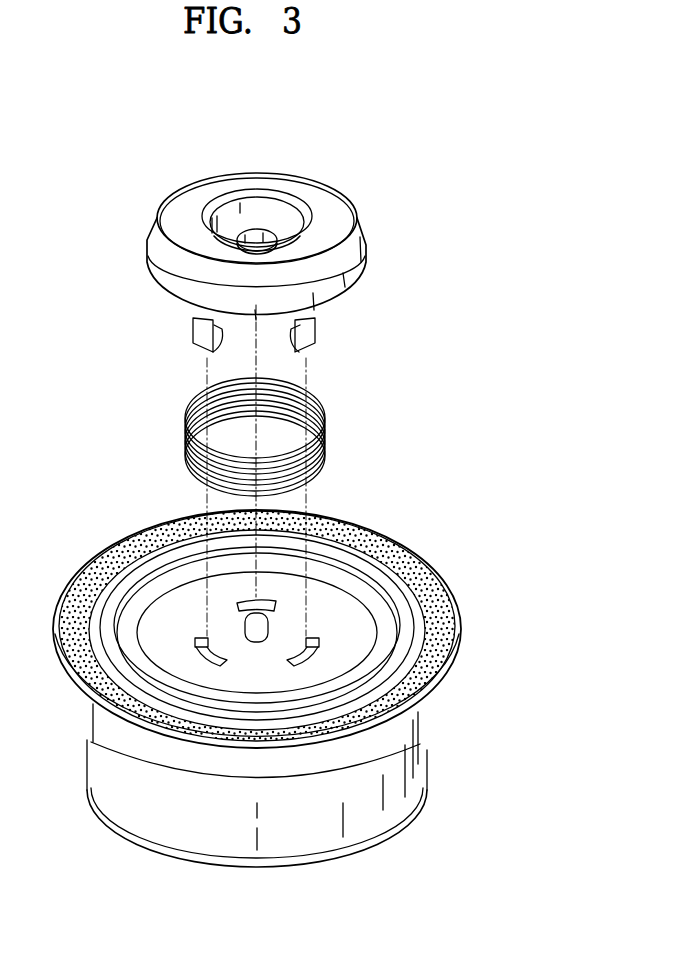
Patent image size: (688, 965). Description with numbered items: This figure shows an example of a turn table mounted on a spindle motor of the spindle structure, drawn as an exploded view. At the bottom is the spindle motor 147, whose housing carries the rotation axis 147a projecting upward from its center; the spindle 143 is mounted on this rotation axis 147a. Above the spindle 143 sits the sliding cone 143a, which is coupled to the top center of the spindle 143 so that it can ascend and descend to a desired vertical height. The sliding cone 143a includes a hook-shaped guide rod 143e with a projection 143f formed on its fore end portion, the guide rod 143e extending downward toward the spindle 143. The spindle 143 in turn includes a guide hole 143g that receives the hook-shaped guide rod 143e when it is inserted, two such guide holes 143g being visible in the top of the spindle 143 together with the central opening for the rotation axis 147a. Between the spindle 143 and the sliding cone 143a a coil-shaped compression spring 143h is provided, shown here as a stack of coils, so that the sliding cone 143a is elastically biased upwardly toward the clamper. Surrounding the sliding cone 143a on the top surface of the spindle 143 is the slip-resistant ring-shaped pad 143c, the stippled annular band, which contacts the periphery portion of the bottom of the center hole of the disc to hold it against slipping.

The spindle 143 is at (480, 618).
The sliding cone 143a is at (373, 219).
The slip-resistant ring-shaped pad 143c is at (433, 590).
The hook-shaped guide rod 143e is at (188, 330).
The projection 143f is at (219, 350).
The guide hole 143g is at (249, 603).
The coil-shaped compression spring 143h is at (326, 437).
The spindle motor 147 is at (418, 742).
The rotation axis 147a is at (262, 628).